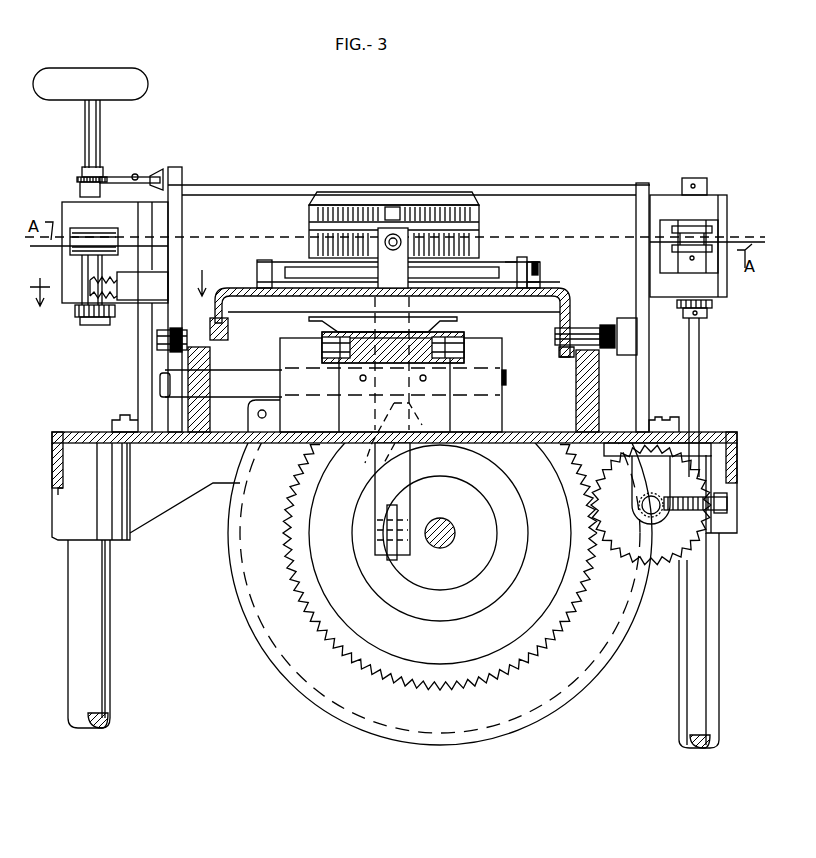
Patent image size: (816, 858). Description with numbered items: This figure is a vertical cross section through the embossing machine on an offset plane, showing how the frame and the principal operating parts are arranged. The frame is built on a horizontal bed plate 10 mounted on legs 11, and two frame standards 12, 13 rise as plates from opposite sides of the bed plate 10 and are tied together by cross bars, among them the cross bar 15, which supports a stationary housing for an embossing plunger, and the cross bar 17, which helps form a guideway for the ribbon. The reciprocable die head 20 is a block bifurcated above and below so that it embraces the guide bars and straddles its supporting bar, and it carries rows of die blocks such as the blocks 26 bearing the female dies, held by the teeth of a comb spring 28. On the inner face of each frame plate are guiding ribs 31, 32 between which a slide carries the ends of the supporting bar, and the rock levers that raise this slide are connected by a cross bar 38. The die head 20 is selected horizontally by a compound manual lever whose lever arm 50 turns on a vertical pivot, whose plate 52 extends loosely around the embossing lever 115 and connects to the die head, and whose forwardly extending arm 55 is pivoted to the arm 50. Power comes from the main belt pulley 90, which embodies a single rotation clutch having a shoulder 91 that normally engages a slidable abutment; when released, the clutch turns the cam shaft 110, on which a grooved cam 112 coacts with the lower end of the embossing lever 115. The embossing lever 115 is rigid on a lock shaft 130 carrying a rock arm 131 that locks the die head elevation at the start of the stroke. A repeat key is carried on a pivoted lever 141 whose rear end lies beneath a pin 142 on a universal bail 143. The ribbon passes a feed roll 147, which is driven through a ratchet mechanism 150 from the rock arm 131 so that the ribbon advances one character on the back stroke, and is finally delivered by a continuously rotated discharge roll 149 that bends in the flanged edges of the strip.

The bed plate 10 is at (558, 420).
The legs 11 is at (100, 615).
The frame standard 12 is at (138, 213).
The frame standard 13 is at (649, 360).
The cross bar 15 is at (593, 358).
The cross bar 17 is at (612, 193).
The die head 20 is at (482, 213).
The die blocks 26 is at (470, 247).
The comb spring 28 is at (480, 228).
The guiding rib 31 is at (158, 331).
The guiding rib 32 is at (628, 330).
The cross bar 38 is at (278, 290).
The lever arm 50 is at (340, 363).
The plate 52 is at (442, 324).
The forwardly extending arm 55 is at (465, 334).
The main belt pulley 90 is at (238, 538).
The shoulder 91 is at (386, 448).
The cam shaft 110 is at (455, 531).
The grooved cam 112 is at (440, 533).
The embossing lever 115 is at (345, 572).
The lock shaft 130 is at (258, 378).
The rock arm 131 is at (182, 217).
The pivoted lever 141 is at (538, 278).
The pin 142 is at (540, 268).
The universal bail 143 is at (505, 262).
The feed roll 147 is at (72, 247).
The discharge roll 149 is at (716, 225).
The ratchet mechanism 150 is at (131, 176).